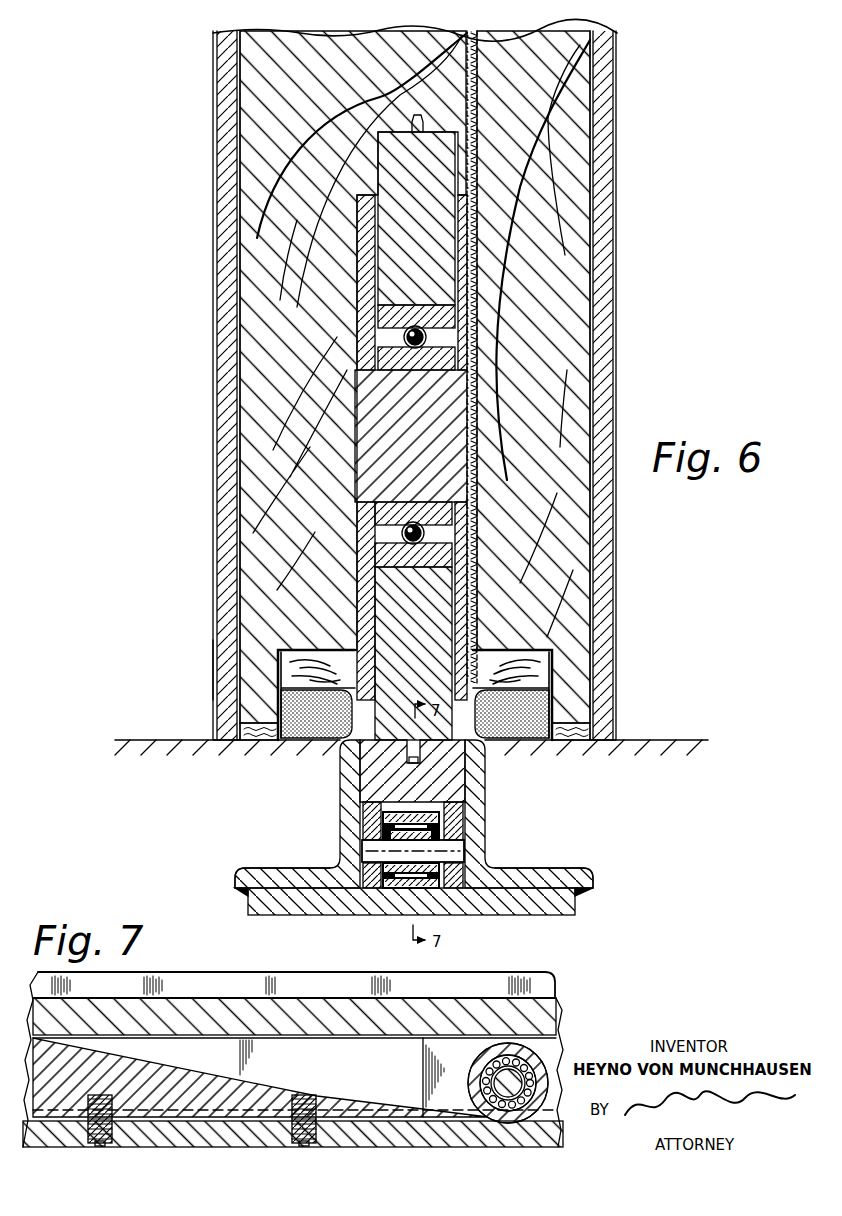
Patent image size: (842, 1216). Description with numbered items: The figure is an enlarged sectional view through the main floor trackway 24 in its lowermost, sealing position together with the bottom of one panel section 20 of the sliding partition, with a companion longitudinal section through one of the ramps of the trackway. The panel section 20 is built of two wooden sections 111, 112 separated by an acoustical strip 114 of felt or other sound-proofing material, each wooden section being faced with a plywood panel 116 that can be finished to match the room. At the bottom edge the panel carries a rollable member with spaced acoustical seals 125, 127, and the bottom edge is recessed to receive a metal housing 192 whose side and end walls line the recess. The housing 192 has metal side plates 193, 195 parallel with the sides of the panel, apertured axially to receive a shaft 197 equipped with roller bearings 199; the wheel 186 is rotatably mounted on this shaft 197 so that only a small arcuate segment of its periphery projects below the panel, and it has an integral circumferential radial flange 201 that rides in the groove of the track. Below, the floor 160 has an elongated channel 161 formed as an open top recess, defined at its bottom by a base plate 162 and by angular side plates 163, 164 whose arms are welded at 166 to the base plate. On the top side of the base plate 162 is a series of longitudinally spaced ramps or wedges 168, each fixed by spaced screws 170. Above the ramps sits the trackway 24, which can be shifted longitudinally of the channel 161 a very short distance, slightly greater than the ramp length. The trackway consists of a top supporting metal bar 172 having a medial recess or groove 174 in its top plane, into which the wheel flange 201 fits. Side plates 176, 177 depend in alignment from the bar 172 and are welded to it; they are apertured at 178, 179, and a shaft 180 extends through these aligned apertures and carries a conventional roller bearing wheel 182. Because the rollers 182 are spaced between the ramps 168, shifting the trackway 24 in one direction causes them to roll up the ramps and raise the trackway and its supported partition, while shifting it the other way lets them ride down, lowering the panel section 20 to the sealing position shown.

In FIG. 6, the panel section 20 is at (213, 675).
In FIG. 6, the main floor trackway 24 is at (378, 772).
In FIG. 6, the wooden section 111 is at (253, 426).
In FIG. 6, the wooden section 112 is at (573, 418).
In FIG. 6, the acoustical strip 114 is at (470, 36).
In FIG. 6, the plywood panel 116 is at (226, 245).
In FIG. 6, the acoustical seal 125 is at (307, 741).
In FIG. 6, the acoustical seal 127 is at (520, 736).
In FIG. 6, the floor 160 is at (640, 739).
In FIG. 6, the elongated channel 161 is at (377, 884).
In FIG. 6, the base plate 162 is at (576, 915).
In FIG. 7, the base plate 162 is at (548, 1147).
In FIG. 6, the angular side plate 163 is at (250, 868).
In FIG. 6, the angular side plate 164 is at (540, 873).
In FIG. 6, the weld 166 is at (246, 891).
In FIG. 7, the ramp 168 is at (258, 1078).
In FIG. 7, the screw 170 is at (108, 1097).
In FIG. 6, the top supporting metal bar 172 is at (383, 787).
In FIG. 7, the top supporting metal bar 172 is at (547, 1017).
In FIG. 6, the medial recess or groove 174 is at (424, 757).
In FIG. 7, the medial recess or groove 174 is at (505, 981).
In FIG. 6, the side plate 176 is at (368, 818).
In FIG. 6, the side plate 177 is at (456, 817).
In FIG. 7, the side plate 177 is at (553, 1088).
In FIG. 6, the aperture 178 is at (384, 832).
In FIG. 6, the aperture 179 is at (456, 832).
In FIG. 6, the shaft 180 is at (454, 852).
In FIG. 7, the shaft 180 is at (483, 1083).
In FIG. 6, the roller bearing wheel 182 is at (421, 813).
In FIG. 7, the roller bearing wheel 182 is at (536, 1062).
In FIG. 6, the wheel 186 is at (428, 607).
In FIG. 6, the metal housing 192 is at (357, 612).
In FIG. 6, the metal side plate 193 is at (362, 526).
In FIG. 6, the metal side plate 195 is at (468, 525).
In FIG. 6, the shaft 197 is at (380, 402).
In FIG. 6, the roller bearing 199 is at (375, 356).
In FIG. 6, the radial flange 201 is at (418, 113).